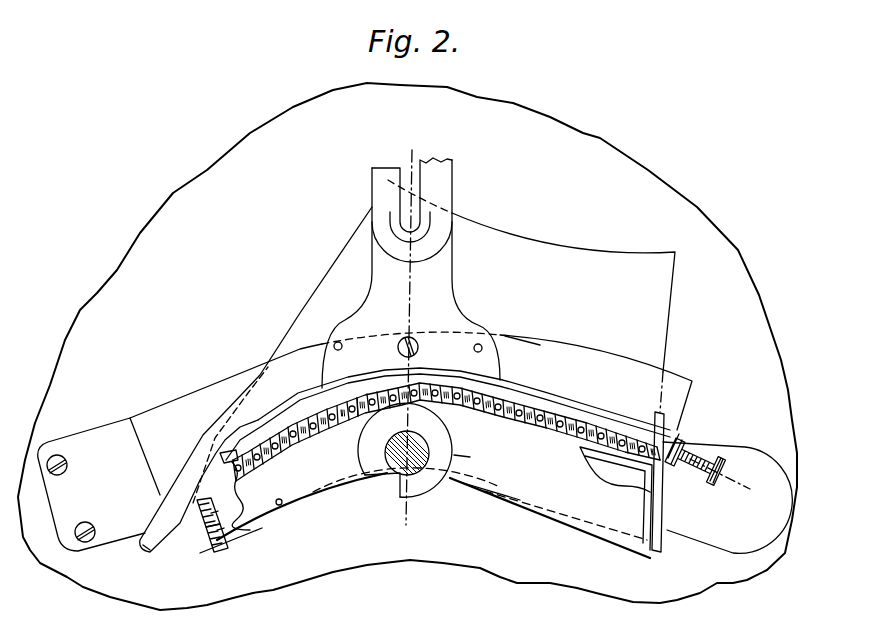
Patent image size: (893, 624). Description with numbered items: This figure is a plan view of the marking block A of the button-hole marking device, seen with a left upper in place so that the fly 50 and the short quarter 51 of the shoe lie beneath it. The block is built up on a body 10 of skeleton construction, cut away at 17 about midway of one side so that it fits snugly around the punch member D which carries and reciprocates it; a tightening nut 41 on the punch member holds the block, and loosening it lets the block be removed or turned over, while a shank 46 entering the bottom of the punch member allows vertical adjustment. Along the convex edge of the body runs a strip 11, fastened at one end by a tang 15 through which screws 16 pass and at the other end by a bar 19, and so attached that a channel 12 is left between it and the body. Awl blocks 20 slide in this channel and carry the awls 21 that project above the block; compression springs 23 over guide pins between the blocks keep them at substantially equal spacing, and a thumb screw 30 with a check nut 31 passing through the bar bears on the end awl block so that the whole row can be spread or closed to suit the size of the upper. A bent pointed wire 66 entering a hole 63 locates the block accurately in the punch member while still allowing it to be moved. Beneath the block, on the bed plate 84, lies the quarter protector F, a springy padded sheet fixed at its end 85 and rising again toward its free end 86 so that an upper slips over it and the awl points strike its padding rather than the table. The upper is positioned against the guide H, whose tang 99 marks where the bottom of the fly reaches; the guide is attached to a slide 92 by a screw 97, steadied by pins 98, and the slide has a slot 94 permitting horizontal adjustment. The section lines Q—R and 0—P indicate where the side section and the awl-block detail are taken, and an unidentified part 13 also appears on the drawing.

The table or bed plate 84 is at (97, 293).
The fixed end of quarter protector 85 is at (87, 440).
The free end of quarter protector 86 is at (707, 533).
The slide 92 is at (380, 259).
The slot 94 is at (418, 177).
The screw 97 is at (413, 337).
The pins 98 is at (440, 358).
The short quarter 51 is at (411, 305).
The strip 11 is at (230, 447).
The channel 12 is at (502, 410).
The arc 13 is at (458, 487).
The tang 15 is at (210, 545).
The screws 16 is at (200, 530).
The cut away portion 17 is at (398, 498).
The bar 19 is at (652, 508).
The awl blocks 20 is at (517, 418).
The awls 21 is at (278, 432).
The compression springs 23 is at (358, 408).
The thumb screw 30 is at (720, 452).
The check nut 31 is at (683, 441).
The tightening nut 41 is at (388, 497).
The shank 46 is at (387, 453).
The fly 50 is at (228, 549).
The hole 63 is at (290, 508).
The bent pointed wire 66 is at (280, 496).
The tang 99 is at (182, 532).
The body 10 is at (267, 532).
The section line O—P 0 is at (557, 437).
The section line Q—R Q is at (412, 326).
The guide H is at (523, 348).
The quarter protector F is at (148, 422).
The punch member D is at (470, 458).
The section line O— P is at (726, 481).
The section line Q— R is at (405, 542).
The marking block A is at (510, 490).